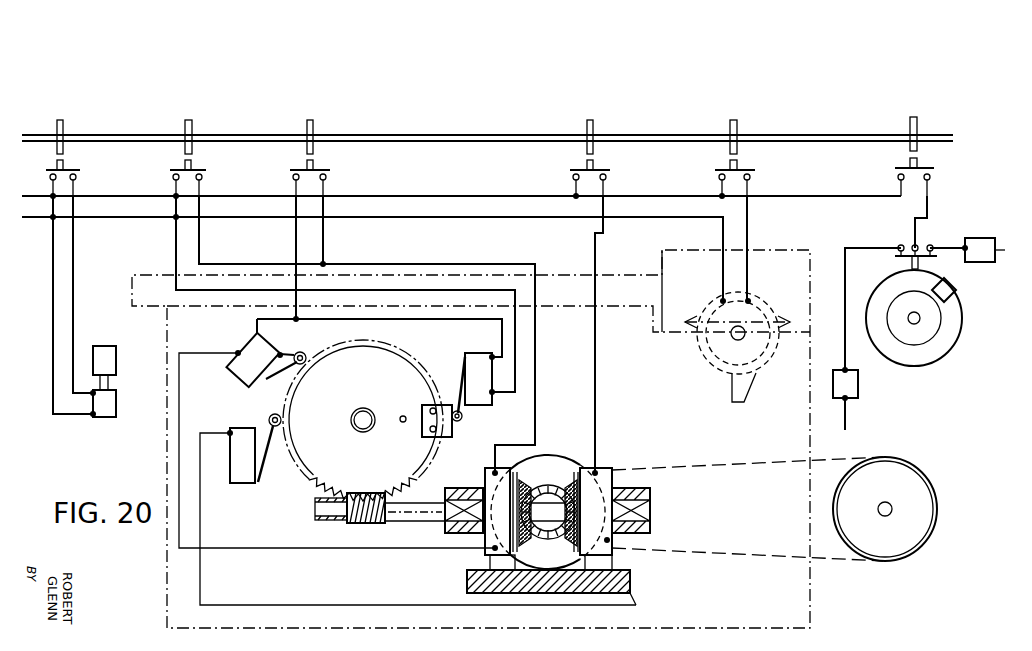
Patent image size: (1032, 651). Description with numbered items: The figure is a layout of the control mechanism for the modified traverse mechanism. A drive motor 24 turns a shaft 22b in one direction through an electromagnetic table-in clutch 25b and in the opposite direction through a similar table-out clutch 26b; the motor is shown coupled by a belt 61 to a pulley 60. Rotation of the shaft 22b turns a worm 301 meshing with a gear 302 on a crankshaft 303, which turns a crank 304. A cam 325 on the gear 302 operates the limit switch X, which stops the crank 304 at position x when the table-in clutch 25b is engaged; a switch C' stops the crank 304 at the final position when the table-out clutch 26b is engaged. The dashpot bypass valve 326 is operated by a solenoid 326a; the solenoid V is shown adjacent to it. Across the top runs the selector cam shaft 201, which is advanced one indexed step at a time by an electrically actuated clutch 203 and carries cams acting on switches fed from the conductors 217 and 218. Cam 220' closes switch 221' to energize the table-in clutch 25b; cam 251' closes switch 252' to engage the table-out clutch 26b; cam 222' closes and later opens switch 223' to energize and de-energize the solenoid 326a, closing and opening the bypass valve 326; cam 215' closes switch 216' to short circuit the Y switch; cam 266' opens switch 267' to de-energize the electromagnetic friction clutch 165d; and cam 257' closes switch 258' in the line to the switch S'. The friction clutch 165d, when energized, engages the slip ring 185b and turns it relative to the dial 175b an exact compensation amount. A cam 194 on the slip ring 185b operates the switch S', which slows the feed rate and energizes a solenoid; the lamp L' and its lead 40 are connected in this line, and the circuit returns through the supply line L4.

The cam shaft 201 is at (55, 135).
The cam 222' is at (83, 130).
The switch 223' is at (89, 178).
The cam 251' is at (209, 130).
The switch 252' is at (212, 178).
The cam 215' is at (337, 130).
The switch 216' is at (339, 178).
The cam 220' is at (620, 130).
The switch 221' is at (615, 178).
The cam 266' is at (764, 130).
The switch 267' is at (765, 178).
The cam 257' is at (939, 127).
The switch 258' is at (939, 176).
The supply conductor 217 is at (42, 196).
The supply conductor 218 is at (34, 217).
The bypass valve 326 is at (120, 337).
The solenoid 326a is at (110, 405).
The solenoid V is at (266, 360).
The limit switch X is at (251, 454).
The crank position x is at (268, 420).
The switch C' is at (475, 383).
The gear 302 is at (416, 360).
The crankshaft 303 is at (368, 410).
The crank 304 is at (398, 424).
The cam 325 is at (452, 432).
The drive motor 24 is at (560, 470).
The table-in clutch 25b is at (605, 478).
The table-out clutch 26b is at (490, 550).
The shaft 22b is at (420, 514).
The worm 301 is at (354, 523).
The electro-magnetic friction clutch 165d is at (790, 279).
The switch S' is at (896, 258).
The lamp L' is at (980, 239).
The lamp lead 40 is at (1009, 251).
The cam 194 is at (956, 288).
The slip ring 185b is at (950, 318).
The dial 175b is at (920, 333).
The clutch 203 is at (860, 387).
The supply line L4 is at (850, 424).
The belt 61 is at (795, 460).
The pulley 60 is at (918, 472).